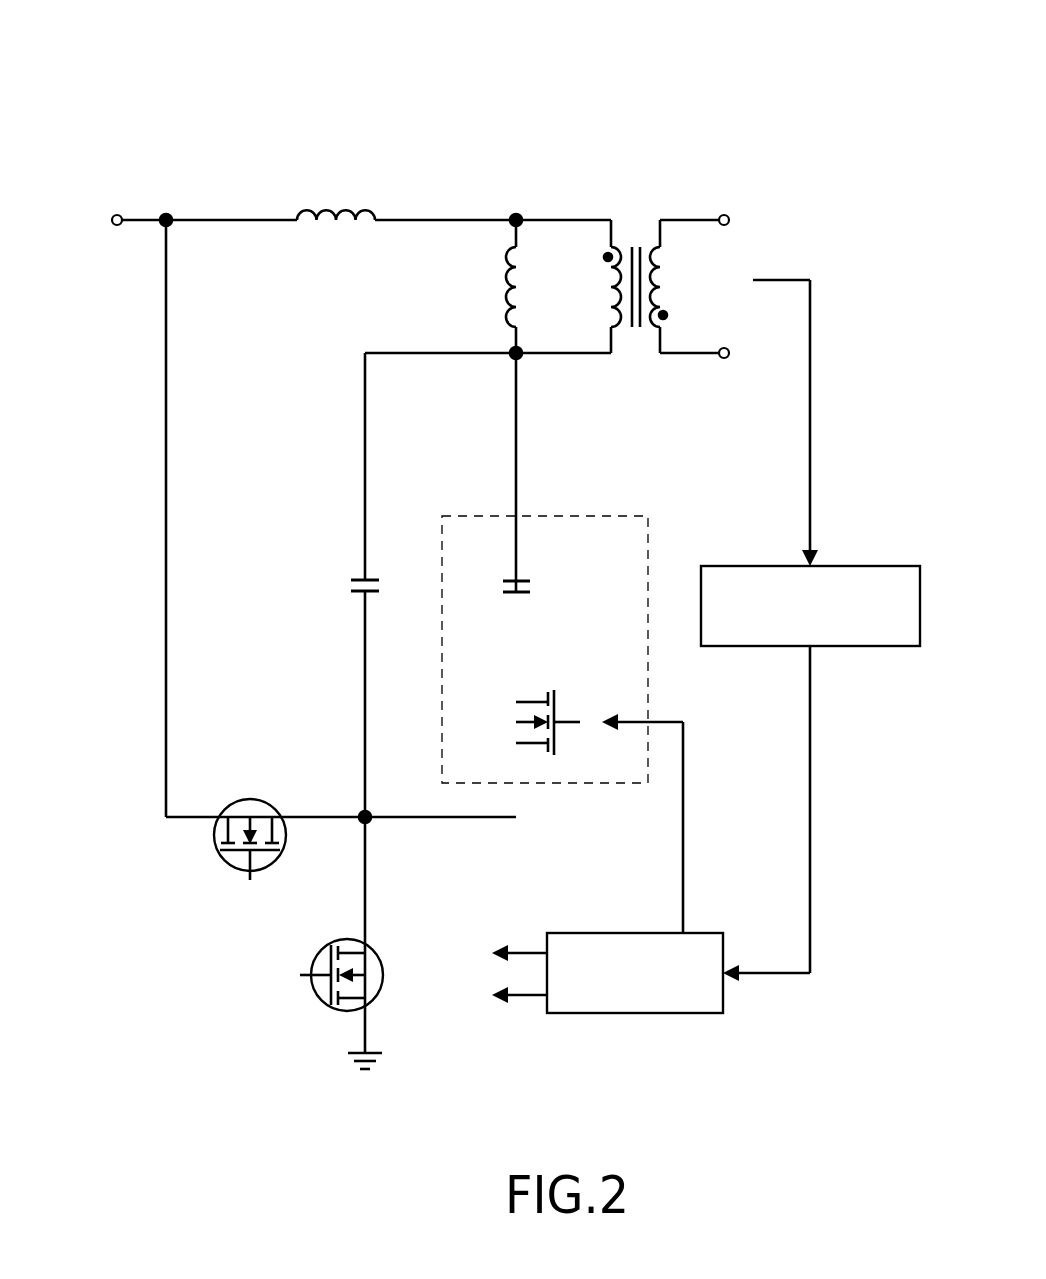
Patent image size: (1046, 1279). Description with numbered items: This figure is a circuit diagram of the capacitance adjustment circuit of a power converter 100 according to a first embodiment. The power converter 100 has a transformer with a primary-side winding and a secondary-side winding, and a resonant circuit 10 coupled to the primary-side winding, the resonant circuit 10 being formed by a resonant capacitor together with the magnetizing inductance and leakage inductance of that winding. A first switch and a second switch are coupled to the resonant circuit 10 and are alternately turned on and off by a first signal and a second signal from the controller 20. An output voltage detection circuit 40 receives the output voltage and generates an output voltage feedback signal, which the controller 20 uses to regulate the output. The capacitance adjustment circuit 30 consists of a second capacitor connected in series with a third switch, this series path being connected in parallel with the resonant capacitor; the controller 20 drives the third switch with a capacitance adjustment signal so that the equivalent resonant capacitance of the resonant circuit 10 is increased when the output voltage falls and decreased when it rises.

The power converter 100 is at (411, 37).
The resonant circuit 10 is at (320, 331).
The controller 20 is at (627, 945).
The capacitance adjustment circuit 30 is at (571, 527).
The output voltage detection circuit 40 is at (875, 578).